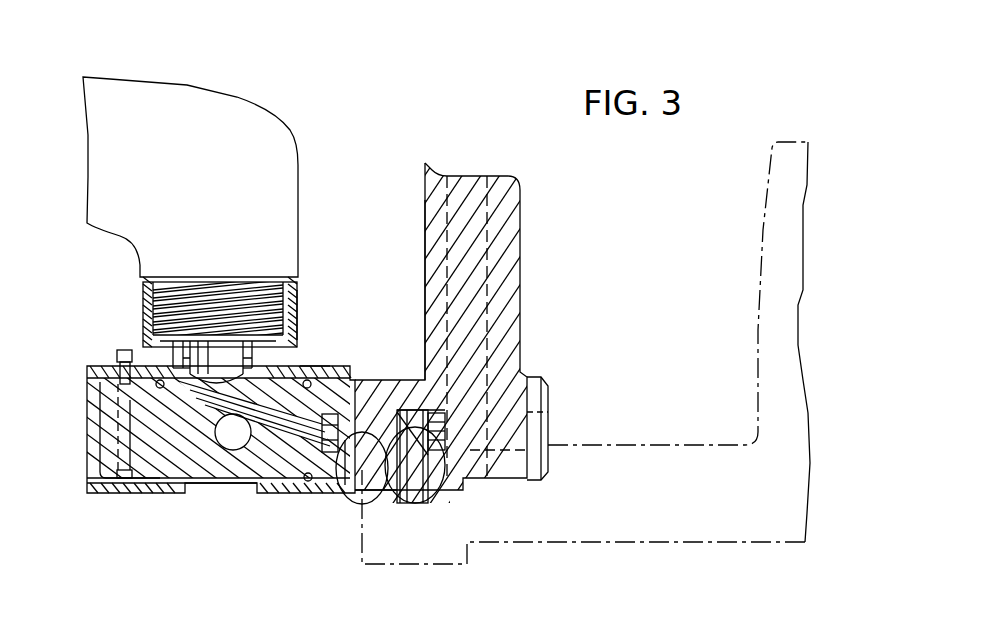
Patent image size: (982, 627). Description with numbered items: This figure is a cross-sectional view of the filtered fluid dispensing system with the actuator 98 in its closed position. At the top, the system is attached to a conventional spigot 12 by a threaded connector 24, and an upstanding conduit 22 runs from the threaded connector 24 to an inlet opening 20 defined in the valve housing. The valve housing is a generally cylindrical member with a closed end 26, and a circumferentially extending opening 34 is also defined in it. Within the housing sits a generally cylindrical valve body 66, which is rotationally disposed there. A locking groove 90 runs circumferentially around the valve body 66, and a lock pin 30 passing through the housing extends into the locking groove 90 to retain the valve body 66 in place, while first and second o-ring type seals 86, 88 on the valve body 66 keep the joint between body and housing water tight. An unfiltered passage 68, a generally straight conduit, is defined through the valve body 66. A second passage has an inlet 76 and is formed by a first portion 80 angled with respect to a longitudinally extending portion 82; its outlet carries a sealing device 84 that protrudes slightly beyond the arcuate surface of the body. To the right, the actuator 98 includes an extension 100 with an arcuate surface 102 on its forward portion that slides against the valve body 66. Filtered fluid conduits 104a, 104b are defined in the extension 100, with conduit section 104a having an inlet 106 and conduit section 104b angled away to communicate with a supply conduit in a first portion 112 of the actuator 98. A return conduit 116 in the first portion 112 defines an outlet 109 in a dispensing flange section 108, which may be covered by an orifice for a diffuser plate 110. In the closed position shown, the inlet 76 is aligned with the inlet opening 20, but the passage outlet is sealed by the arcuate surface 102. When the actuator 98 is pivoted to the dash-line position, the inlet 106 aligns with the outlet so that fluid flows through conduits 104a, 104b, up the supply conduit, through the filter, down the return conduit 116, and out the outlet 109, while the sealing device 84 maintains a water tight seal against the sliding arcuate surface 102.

The spigot 12 is at (193, 115).
The inlet opening 20 is at (292, 305).
The upstanding conduit 22 is at (172, 347).
The threaded connector 24 is at (143, 320).
The closed end 26 is at (88, 421).
The lock pin 30 is at (118, 352).
The circumferentially extending opening 34 is at (238, 493).
The valve body 66 is at (149, 452).
The unfiltered passage 68 is at (233, 440).
The inlet 76 is at (265, 352).
The first portion 80 is at (273, 410).
The longitudinally extending portion 82 is at (343, 457).
The sealing device 84 is at (360, 430).
The first o-ring type seal 86 is at (315, 367).
The second o-ring type seal 88 is at (161, 488).
The locking groove 90 is at (115, 492).
The actuator 98 is at (512, 178).
The extension 100 is at (410, 378).
The arcuate surface 102 is at (382, 503).
The conduit section 104a is at (415, 478).
The conduit section 104b is at (503, 478).
The inlet 106 is at (417, 500).
The dispensing flange section 108 is at (532, 372).
The outlet 109 is at (550, 435).
The diffuser plate 110 is at (548, 402).
The first portion 112 is at (512, 292).
The return conduit 116 is at (470, 318).